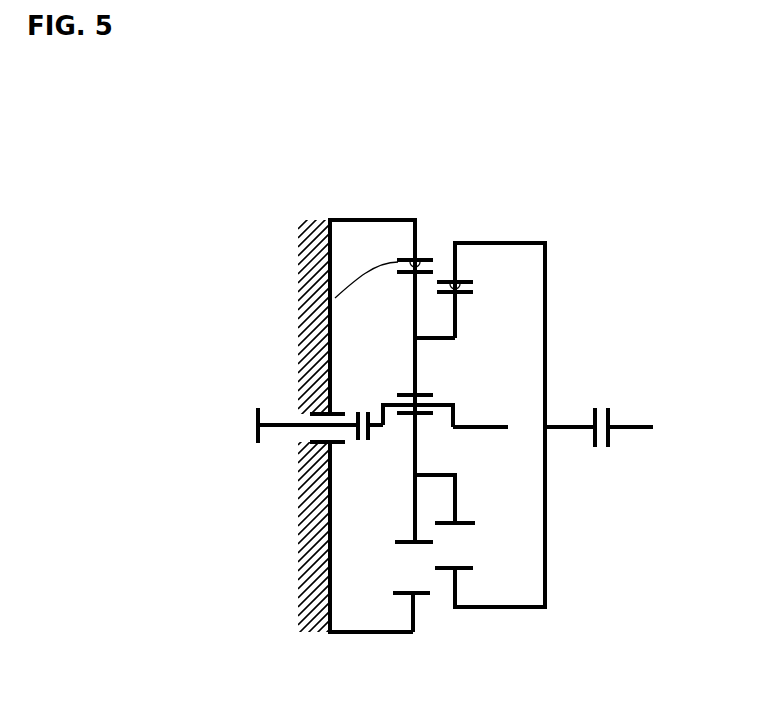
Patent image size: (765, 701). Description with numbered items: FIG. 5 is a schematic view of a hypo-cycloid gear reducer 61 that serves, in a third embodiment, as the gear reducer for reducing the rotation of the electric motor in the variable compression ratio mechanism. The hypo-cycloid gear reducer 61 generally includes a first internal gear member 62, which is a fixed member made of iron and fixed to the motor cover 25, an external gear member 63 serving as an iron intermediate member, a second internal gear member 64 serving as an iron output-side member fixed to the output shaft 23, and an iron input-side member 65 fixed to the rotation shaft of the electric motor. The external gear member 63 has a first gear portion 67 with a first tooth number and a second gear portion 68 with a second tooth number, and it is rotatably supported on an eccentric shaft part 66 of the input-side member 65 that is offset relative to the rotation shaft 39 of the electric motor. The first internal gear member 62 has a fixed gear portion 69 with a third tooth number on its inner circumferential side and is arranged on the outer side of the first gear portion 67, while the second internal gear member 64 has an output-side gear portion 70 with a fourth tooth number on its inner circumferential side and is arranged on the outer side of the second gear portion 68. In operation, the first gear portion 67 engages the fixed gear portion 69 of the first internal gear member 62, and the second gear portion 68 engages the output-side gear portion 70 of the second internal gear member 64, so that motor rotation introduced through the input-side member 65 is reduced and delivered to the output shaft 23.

The output shaft 23 is at (633, 425).
The motor cover 25 is at (308, 222).
The rotation shaft 39 is at (280, 428).
The hypo-cycloid gear reducer 61 is at (495, 378).
The first internal gear member 62 is at (368, 220).
The external gear member 63 is at (420, 372).
The second internal gear member 64 is at (545, 267).
The input-side member 65 is at (483, 428).
The eccentric shaft part 66 is at (440, 418).
The first gear portion 67 is at (318, 322).
The second gear portion 68 is at (470, 293).
The fixed gear portion 69 is at (406, 258).
The output-side gear portion 70 is at (456, 283).